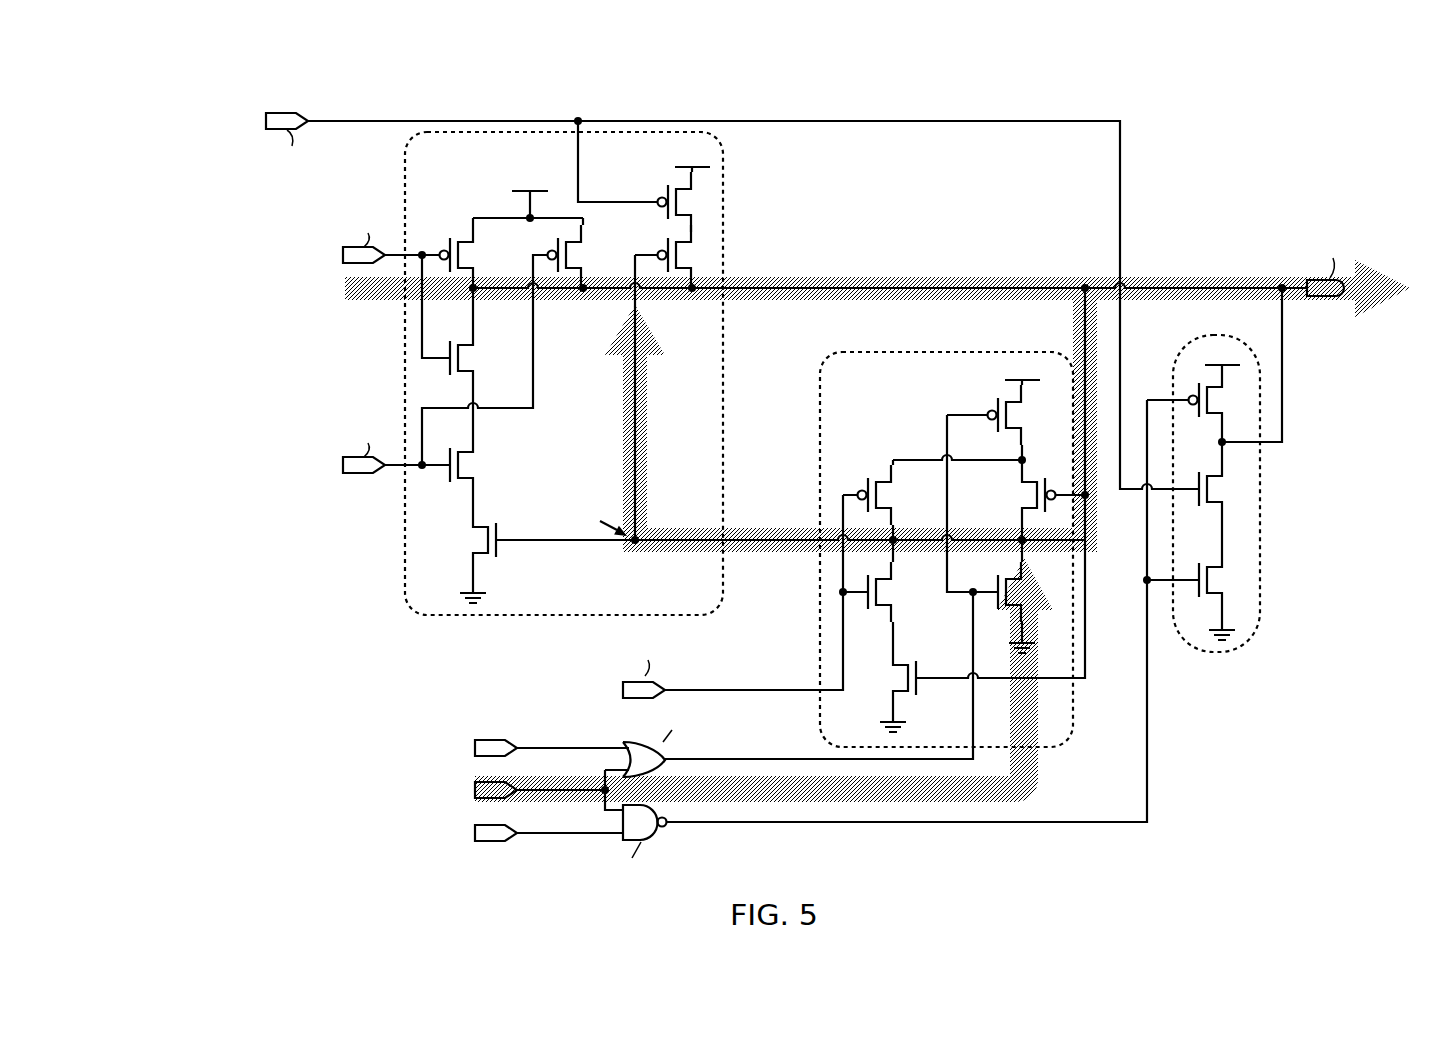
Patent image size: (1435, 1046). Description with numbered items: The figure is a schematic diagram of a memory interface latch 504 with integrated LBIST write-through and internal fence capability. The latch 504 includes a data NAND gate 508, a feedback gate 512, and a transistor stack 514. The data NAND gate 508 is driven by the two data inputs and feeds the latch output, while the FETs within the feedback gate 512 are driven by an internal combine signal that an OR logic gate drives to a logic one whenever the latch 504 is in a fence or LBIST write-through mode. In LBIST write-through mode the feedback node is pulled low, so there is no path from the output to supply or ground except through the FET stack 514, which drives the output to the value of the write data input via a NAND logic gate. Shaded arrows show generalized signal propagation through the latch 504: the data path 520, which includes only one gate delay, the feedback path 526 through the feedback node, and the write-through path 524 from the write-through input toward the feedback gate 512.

The memory interface latch 504 is at (198, 98).
The data NAND gate 508 is at (405, 620).
The feedback gate 512 is at (994, 346).
The transistor stack 514 is at (1232, 666).
The data path 520 is at (338, 299).
The write-through path 524 is at (992, 798).
The feedback path 526 is at (790, 528).